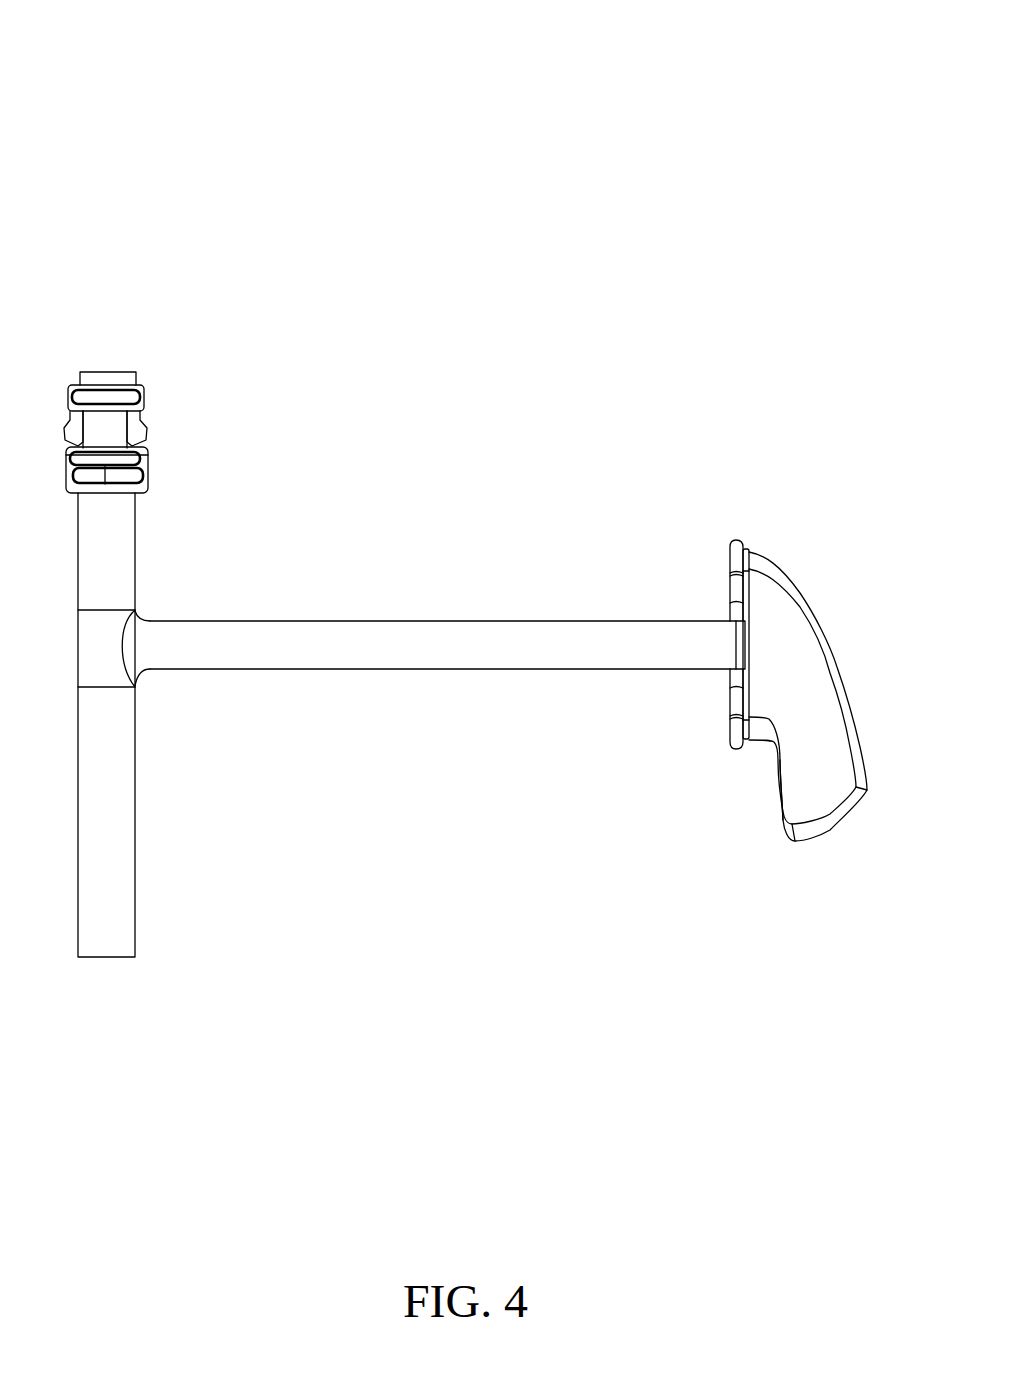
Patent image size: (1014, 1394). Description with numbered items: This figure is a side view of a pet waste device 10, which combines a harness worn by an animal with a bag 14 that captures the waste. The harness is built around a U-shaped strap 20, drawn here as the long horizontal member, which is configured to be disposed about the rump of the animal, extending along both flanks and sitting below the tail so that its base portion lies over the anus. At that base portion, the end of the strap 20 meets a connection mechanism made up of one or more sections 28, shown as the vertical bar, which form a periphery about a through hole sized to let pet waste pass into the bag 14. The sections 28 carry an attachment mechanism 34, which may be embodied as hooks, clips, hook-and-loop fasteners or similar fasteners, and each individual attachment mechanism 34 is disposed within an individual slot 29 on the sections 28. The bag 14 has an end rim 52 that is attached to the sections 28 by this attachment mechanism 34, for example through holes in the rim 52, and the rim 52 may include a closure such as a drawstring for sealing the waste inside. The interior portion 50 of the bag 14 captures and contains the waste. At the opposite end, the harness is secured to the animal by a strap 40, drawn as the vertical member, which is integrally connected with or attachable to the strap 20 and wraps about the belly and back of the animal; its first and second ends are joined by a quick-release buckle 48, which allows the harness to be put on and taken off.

The pet waste device 10 is at (127, 171).
The bag 14 is at (818, 668).
The U-shaped strap 20 is at (453, 660).
The sections 28 is at (738, 590).
The slot 29 is at (730, 575).
The attachment mechanism 34 is at (731, 572).
The strap 40 is at (120, 940).
The quick-release buckle 48 is at (140, 436).
The interior portion 50 is at (800, 763).
The end rim 52 is at (745, 550).